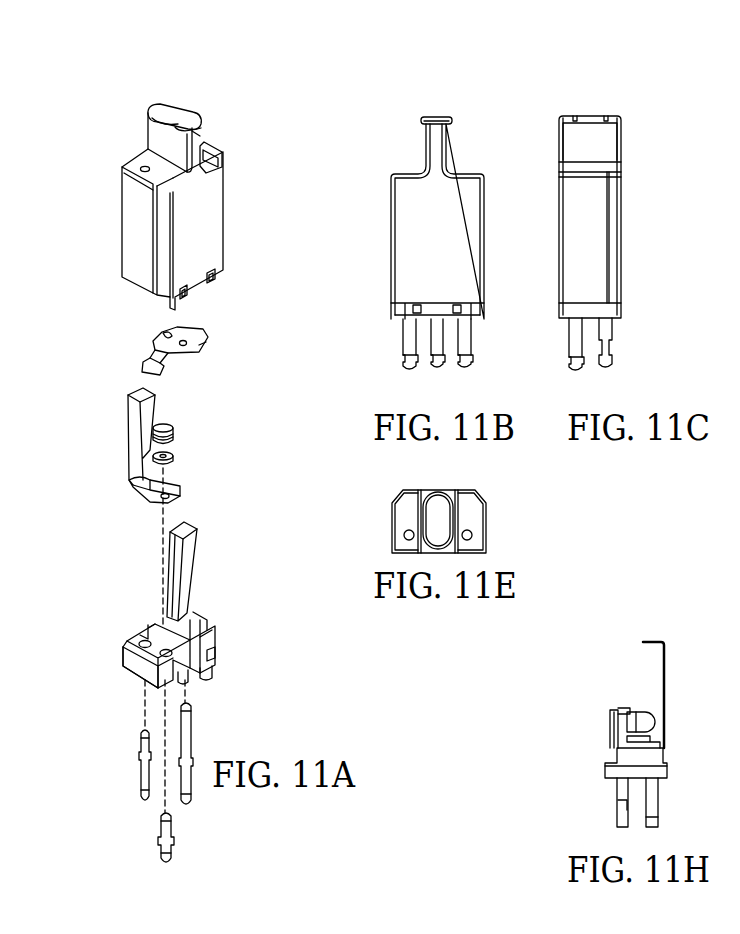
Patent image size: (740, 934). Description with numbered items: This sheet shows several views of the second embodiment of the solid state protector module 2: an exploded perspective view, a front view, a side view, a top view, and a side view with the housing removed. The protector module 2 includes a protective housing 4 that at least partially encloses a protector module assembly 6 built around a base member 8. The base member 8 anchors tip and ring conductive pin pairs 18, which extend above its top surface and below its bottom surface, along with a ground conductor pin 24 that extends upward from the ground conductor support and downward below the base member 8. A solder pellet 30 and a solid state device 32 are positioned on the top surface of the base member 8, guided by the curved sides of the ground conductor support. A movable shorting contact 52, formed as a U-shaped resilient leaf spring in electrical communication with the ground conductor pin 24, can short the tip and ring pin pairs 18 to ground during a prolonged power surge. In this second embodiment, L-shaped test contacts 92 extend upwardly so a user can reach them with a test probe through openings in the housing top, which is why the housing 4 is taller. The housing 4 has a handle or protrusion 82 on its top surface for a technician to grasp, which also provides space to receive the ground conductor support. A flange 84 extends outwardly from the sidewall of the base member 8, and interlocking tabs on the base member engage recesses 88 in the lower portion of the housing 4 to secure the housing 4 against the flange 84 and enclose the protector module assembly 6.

In FIG. 11A, the solid state protector module 2 is at (167, 201).
In FIG. 11A, the protective housing 4 is at (208, 155).
In FIG. 11B, the protective housing 4 is at (417, 196).
In FIG. 11C, the protective housing 4 is at (573, 217).
In FIG. 11E, the protective housing 4 is at (454, 503).
In FIG. 11A, the recesses or slots 88 is at (216, 277).
In FIG. 11A, the movable shorting contact 52 is at (208, 340).
In FIG. 11A, the L-shaped test contacts 92 is at (133, 418).
In FIG. 11A, the solid state device 32 is at (167, 426).
In FIG. 11A, the solder pellet 30 is at (177, 457).
In FIG. 11A, the protector module assembly 6 is at (156, 612).
In FIG. 11A, the base member 8 is at (212, 652).
In FIG. 11A, the flange 84 is at (138, 672).
In FIG. 11A, the tip and ring conductive pin pairs 18 is at (140, 757).
In FIG. 11B, the tip and ring conductive pin pairs 18 is at (404, 338).
In FIG. 11A, the ground conductor pin 24 is at (192, 740).
In FIG. 11B, the ground conductor pin 24 is at (436, 368).
In FIG. 11H, the ground conductor pin 24 is at (621, 708).
In FIG. 11B, the handle or protrusion 82 is at (448, 118).
In FIG. 11C, the handle or protrusion 82 is at (559, 150).
In FIG. 11E, the handle or protrusion 82 is at (440, 491).